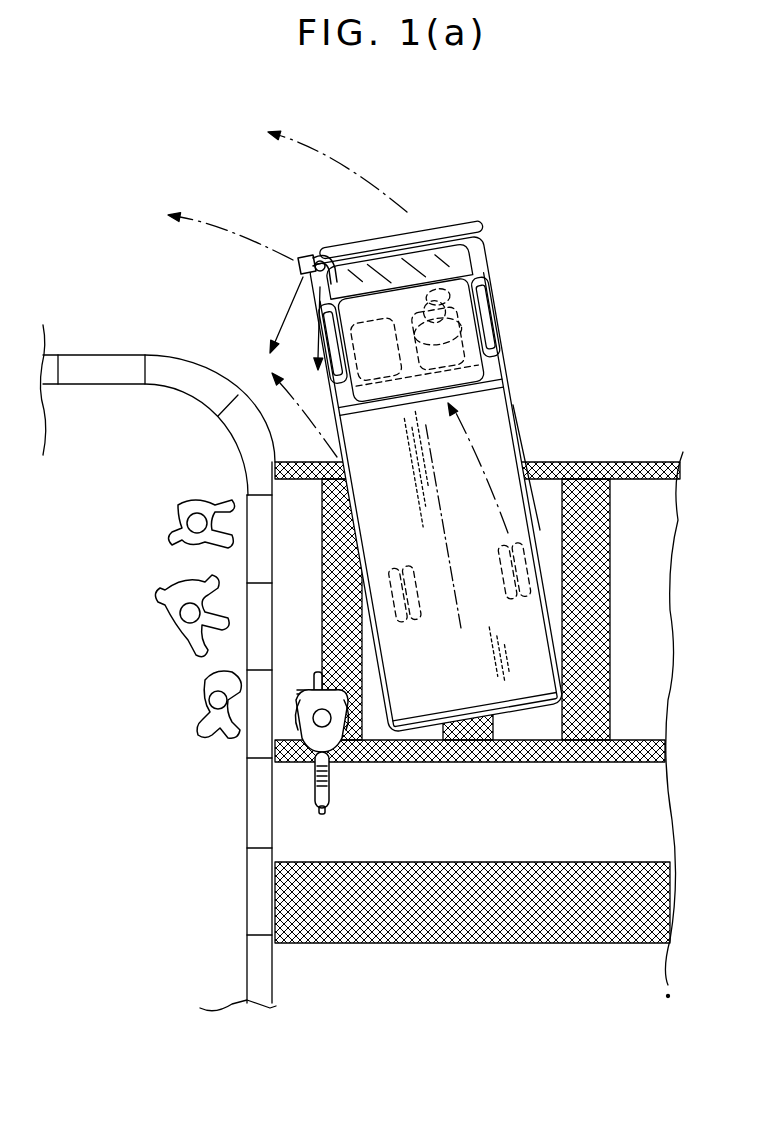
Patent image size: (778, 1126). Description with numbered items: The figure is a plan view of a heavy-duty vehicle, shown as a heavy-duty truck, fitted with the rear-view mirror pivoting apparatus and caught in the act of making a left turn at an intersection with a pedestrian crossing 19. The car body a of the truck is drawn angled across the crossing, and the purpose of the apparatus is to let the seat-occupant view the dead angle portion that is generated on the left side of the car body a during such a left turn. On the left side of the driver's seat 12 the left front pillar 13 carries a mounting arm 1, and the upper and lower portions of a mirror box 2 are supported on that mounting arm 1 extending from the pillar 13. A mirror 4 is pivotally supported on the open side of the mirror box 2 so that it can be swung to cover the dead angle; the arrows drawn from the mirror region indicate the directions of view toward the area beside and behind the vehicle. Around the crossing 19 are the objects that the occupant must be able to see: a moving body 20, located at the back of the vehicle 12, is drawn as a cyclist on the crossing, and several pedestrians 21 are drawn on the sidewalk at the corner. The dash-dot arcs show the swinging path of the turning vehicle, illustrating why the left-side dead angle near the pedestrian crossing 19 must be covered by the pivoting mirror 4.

The mounting arm 1 is at (318, 261).
The mirror box 2 is at (302, 258).
The mirror 4 is at (296, 323).
The driver's seat 12 is at (518, 322).
The left front pillar 13 is at (333, 281).
The pedestrian crossing 19 is at (643, 490).
The moving body 20 is at (337, 768).
The pedestrians 21 is at (178, 521).
The car body a is at (535, 441).